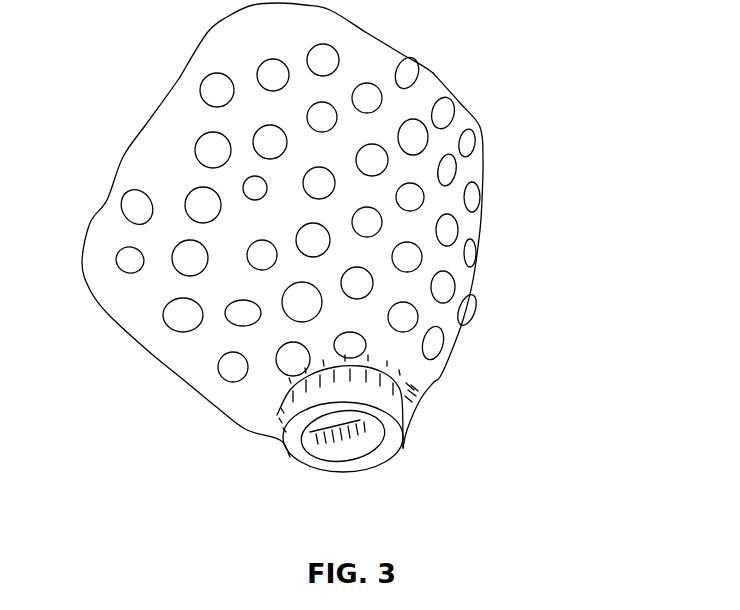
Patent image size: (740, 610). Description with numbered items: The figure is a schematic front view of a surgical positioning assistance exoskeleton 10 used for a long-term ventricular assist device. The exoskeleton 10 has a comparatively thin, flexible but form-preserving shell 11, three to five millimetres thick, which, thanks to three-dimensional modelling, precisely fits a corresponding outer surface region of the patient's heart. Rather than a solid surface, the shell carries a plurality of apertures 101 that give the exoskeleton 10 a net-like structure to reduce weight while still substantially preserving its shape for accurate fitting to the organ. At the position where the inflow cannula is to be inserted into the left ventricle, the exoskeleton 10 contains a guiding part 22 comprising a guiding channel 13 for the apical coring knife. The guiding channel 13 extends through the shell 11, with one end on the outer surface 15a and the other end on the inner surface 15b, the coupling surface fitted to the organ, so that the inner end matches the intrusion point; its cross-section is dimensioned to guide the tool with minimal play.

The exoskeleton 10 is at (503, 90).
The shell 11 is at (318, 229).
The apertures 101 is at (486, 260).
The outer surface 15a is at (178, 267).
The inner surface 15b is at (170, 80).
The guiding part 22 is at (373, 438).
The guiding channel 13 is at (330, 445).